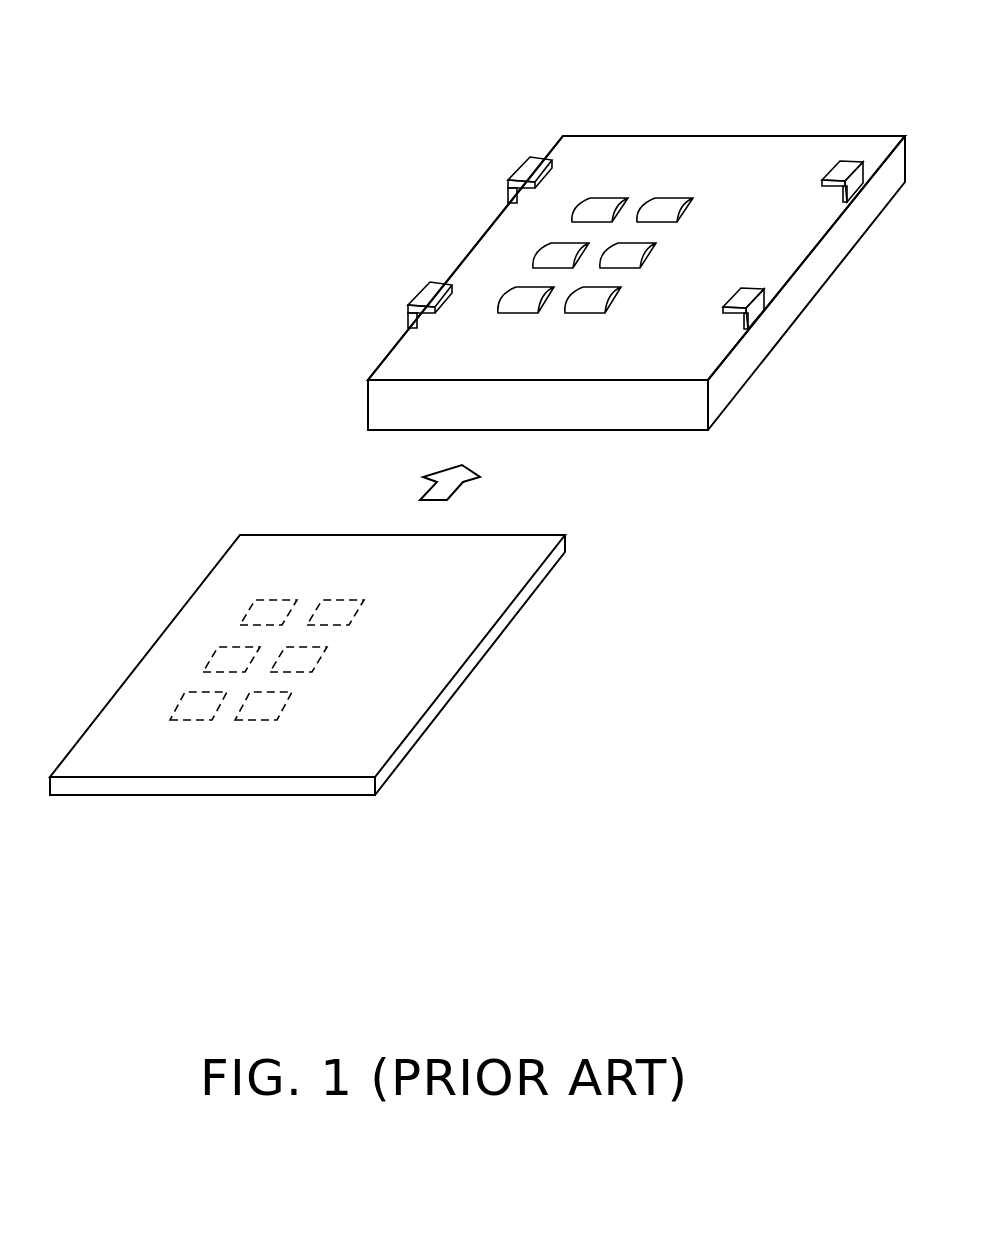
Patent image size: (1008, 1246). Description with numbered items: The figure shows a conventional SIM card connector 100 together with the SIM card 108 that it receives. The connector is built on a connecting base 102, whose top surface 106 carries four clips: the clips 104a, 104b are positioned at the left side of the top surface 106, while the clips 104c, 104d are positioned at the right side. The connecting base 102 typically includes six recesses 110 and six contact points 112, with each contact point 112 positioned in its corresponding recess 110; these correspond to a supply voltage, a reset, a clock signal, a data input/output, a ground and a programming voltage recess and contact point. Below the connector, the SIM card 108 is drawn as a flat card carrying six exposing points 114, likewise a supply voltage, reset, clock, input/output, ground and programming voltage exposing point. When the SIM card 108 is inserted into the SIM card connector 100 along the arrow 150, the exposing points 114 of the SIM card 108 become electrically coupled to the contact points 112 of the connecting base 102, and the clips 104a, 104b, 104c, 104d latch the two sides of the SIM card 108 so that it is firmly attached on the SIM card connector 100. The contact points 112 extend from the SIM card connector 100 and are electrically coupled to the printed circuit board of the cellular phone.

The SIM card connector 100 is at (640, 130).
The connecting base 102 is at (818, 266).
The clip 104a is at (513, 187).
The clip 104b is at (407, 313).
The clip 104c is at (860, 190).
The clip 104d is at (753, 308).
The top surface 106 is at (685, 150).
The SIM card 108 is at (448, 698).
The recesses 110 is at (612, 301).
The contact points 112 is at (672, 203).
The exposing points 114 is at (350, 605).
The arrow 150 is at (420, 492).